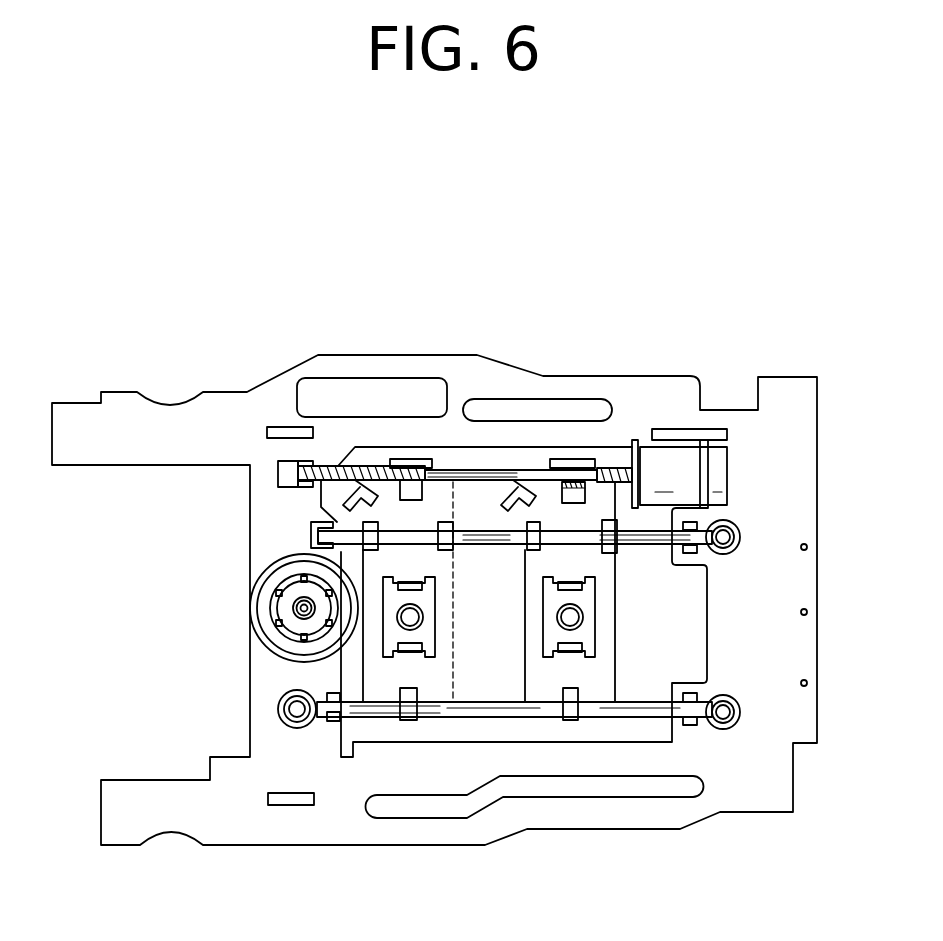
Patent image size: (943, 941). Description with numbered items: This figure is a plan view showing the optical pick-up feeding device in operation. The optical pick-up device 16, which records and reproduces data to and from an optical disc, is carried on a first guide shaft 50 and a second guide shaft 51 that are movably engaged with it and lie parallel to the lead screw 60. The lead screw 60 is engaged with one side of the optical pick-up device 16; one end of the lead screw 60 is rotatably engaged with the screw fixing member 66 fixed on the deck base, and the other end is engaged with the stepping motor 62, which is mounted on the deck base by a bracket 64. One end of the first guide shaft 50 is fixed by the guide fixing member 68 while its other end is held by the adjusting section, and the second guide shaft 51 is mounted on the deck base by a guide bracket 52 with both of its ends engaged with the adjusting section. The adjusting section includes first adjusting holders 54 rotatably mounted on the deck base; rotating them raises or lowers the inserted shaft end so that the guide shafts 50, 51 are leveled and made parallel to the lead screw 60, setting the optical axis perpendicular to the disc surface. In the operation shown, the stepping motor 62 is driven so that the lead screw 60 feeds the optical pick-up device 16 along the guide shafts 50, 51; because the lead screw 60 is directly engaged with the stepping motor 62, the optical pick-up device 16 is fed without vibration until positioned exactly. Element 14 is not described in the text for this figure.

The spindle motor 14 is at (278, 610).
The optical pick-up device 16 is at (613, 622).
The first guide shaft 50 is at (490, 545).
The second guide shaft 51 is at (443, 717).
The guide bracket 52 is at (690, 553).
The first adjusting holder 54 is at (740, 534).
The lead screw 60 is at (485, 470).
The stepping motor 62 is at (687, 472).
The bracket 64 is at (637, 440).
The screw fixing member 66 is at (288, 473).
The guide fixing member 68 is at (308, 527).